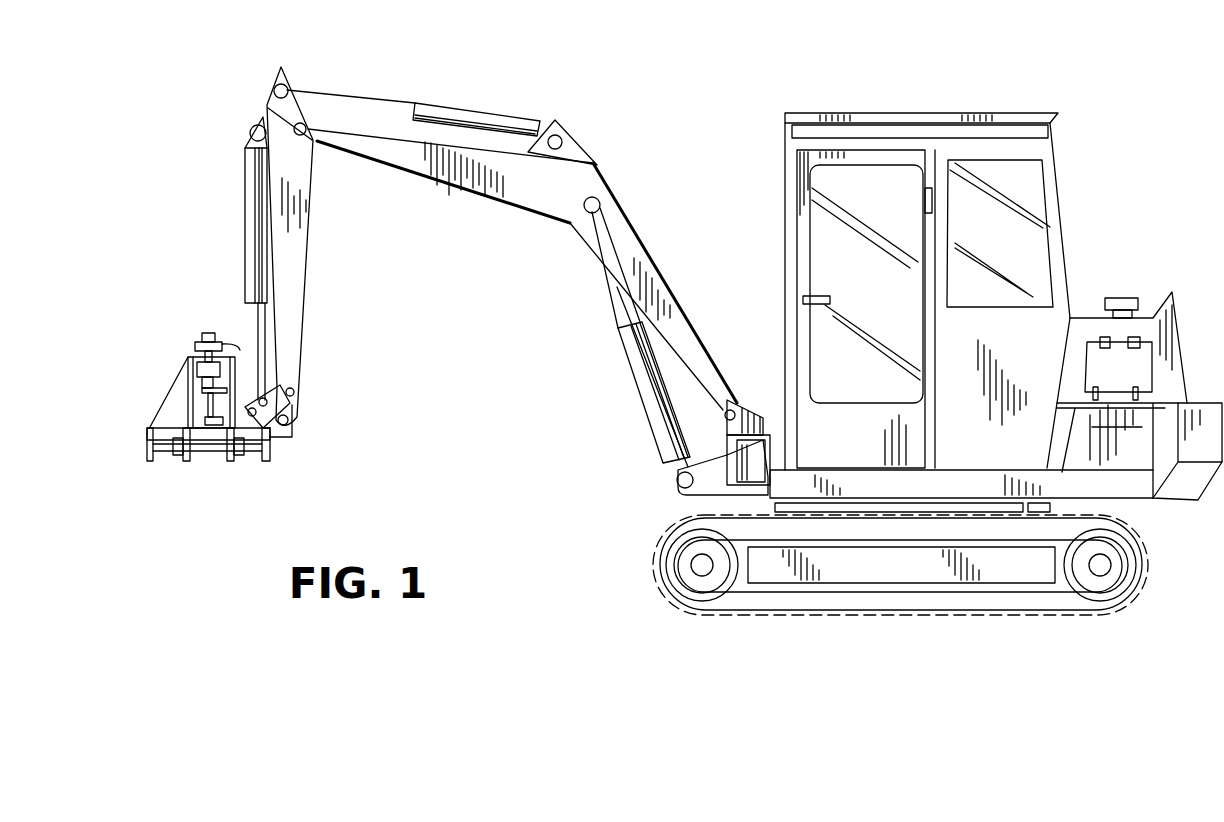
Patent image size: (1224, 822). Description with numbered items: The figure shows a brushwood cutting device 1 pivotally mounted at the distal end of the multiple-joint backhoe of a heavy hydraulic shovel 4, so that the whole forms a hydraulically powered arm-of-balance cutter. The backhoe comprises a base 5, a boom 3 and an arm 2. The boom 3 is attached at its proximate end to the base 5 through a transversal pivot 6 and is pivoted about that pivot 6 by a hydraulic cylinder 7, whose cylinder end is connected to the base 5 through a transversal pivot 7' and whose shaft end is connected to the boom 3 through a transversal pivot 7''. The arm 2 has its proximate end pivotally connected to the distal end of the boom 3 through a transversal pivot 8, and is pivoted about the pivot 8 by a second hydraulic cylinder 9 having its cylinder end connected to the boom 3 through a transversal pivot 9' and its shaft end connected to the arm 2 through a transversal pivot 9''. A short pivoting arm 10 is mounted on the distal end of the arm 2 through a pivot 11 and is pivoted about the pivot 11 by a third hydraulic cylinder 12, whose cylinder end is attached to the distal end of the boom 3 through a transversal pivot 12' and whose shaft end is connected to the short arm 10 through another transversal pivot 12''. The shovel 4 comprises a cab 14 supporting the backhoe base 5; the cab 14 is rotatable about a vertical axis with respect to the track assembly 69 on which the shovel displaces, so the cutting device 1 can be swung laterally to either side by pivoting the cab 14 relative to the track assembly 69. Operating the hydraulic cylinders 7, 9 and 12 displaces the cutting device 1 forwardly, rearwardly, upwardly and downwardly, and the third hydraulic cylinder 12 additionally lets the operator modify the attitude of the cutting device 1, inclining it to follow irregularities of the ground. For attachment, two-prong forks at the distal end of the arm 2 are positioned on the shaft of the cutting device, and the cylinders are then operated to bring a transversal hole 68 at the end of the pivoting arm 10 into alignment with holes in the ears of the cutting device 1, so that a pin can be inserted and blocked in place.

The brushwood cutting device 1 is at (140, 375).
The arm 2 is at (297, 292).
The boom 3 is at (525, 193).
The heavy hydraulic shovel 4 is at (937, 349).
The base 5 is at (757, 427).
The transversal pivot 6 is at (734, 408).
The hydraulic cylinder 7 is at (631, 335).
The transversal pivot 7' is at (685, 470).
The transversal pivot 7'' is at (627, 192).
The transversal pivot 8 is at (301, 137).
The second hydraulic cylinder 9 is at (413, 92).
The transversal pivot 9' is at (566, 125).
The transversal pivot 9'' is at (306, 62).
The short pivoting arm 10 is at (297, 422).
The pivot 11 is at (299, 390).
The third hydraulic cylinder 12 is at (225, 258).
The transversal pivot 12' is at (216, 144).
The transversal pivot 12'' is at (224, 347).
The cab 14 is at (952, 112).
The transversal hole 68 is at (252, 417).
The track assembly 69 is at (975, 616).